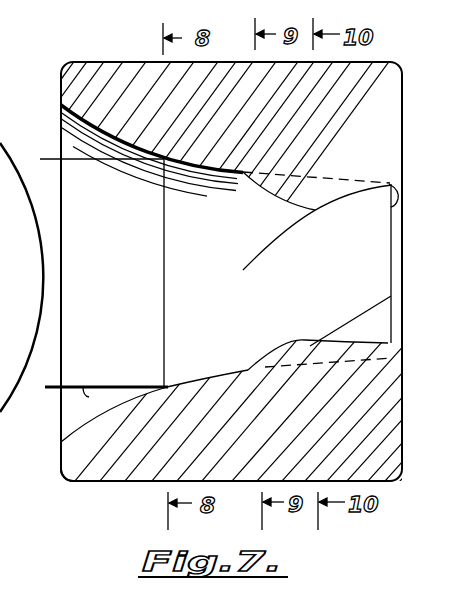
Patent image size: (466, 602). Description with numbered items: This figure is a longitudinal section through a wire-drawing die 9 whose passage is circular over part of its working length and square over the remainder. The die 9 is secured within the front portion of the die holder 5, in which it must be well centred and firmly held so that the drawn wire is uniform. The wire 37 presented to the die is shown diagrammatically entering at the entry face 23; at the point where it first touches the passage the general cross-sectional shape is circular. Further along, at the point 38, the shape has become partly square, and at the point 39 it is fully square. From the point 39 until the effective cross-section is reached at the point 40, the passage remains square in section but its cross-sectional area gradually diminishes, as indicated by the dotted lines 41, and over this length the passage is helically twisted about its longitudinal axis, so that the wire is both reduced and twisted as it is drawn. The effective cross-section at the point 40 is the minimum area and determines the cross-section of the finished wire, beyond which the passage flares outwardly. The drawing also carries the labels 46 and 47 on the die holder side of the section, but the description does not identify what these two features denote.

The die holder 5 is at (21, 277).
The die 9 is at (58, 481).
The entry face 23 is at (61, 93).
The wire 37 is at (75, 394).
The point of partly square cross-section 38 is at (257, 362).
The point of fully square cross-section 39 is at (308, 334).
The point of effective cross-section 40 is at (392, 200).
The dotted lines 41 is at (287, 170).
The ball surface 46 is at (16, 232).
The ball surface 47 is at (16, 260).